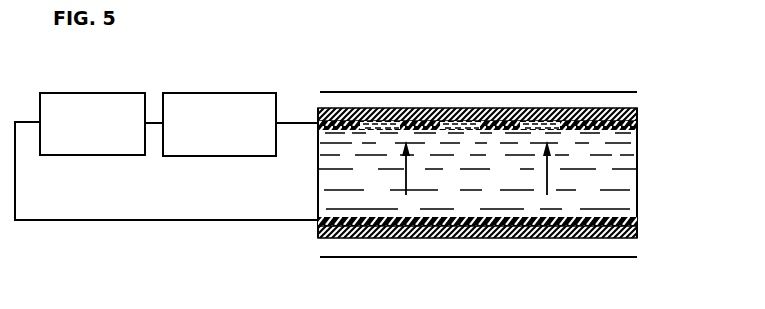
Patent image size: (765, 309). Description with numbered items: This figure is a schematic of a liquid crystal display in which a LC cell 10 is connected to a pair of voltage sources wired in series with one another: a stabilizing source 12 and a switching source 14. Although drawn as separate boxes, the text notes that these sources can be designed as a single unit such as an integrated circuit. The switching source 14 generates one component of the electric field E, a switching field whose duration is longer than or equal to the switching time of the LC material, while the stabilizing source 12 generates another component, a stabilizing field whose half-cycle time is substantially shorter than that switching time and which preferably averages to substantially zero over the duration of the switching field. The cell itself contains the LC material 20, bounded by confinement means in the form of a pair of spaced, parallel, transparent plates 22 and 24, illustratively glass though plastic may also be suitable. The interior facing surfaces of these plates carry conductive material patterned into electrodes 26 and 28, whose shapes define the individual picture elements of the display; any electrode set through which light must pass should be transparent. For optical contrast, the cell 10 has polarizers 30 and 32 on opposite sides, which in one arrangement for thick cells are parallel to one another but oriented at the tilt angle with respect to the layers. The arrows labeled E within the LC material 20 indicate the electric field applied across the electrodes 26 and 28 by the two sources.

The LC cell 10 is at (523, 176).
The stabilizing source 12 is at (201, 93).
The switching source 14 is at (85, 93).
The LC material 20 is at (630, 162).
The transparent plate 22 is at (637, 236).
The transparent plate 24 is at (637, 114).
The electrode 26 is at (637, 223).
The electrode 28 is at (637, 129).
The polarizer 30 is at (598, 257).
The polarizer 32 is at (590, 92).